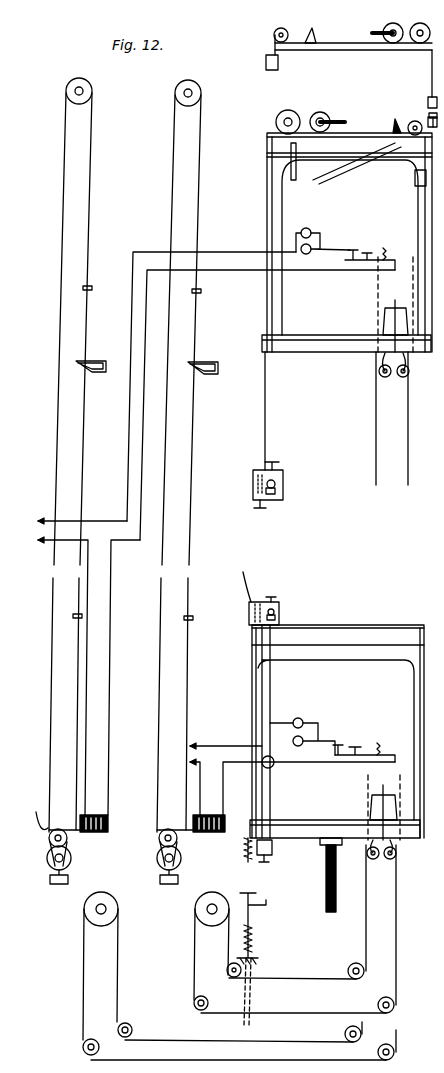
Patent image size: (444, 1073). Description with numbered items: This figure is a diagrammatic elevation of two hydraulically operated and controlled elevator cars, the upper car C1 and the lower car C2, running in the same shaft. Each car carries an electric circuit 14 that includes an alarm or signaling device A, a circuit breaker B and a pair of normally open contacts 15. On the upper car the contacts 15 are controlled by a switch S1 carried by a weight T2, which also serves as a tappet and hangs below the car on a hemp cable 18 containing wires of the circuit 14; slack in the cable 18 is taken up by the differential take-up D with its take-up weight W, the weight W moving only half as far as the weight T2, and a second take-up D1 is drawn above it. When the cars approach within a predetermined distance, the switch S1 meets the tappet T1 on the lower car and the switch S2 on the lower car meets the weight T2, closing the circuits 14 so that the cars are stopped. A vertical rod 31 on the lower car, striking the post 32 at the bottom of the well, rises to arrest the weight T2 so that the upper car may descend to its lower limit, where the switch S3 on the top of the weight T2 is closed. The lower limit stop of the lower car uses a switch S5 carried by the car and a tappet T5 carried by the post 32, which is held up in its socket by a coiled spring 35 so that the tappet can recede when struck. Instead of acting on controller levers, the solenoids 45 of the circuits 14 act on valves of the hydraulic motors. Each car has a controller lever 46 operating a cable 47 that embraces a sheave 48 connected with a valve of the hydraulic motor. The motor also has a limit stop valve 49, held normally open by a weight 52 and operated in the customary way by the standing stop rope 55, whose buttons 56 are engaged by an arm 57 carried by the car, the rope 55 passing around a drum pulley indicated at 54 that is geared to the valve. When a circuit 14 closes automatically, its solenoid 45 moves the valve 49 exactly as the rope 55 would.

The upper drive shaft assembly D1 is at (353, 28).
The differential take-up D is at (355, 118).
The take-up weight W is at (279, 63).
The upper elevator car C1 is at (347, 255).
The lower elevator car C2 is at (337, 768).
The alarm or signaling device A is at (310, 481).
The circuit breaker B is at (364, 496).
The circuit 14 is at (292, 210).
The controller lever 46 is at (395, 306).
The cable 18 is at (267, 420).
The switch S3 is at (279, 464).
The weight T2 is at (283, 486).
The switch S1 is at (262, 510).
The cable 47 is at (410, 465).
The vertical rod 31 is at (228, 862).
The tappet T1 is at (265, 600).
The switch S2 is at (276, 598).
The contacts 15 is at (279, 617).
The standing stop rope 55 is at (48, 718).
The buttons 56 is at (92, 288).
The arm 57 is at (96, 361).
The belt support 54 is at (34, 812).
The solenoid 45 is at (95, 815).
The limit stop valve 49 is at (155, 858).
The weight 52 is at (59, 884).
The sheave or pulley 48 is at (108, 896).
The post 32 is at (246, 898).
The switch S5 is at (268, 862).
The tappet T5 is at (266, 905).
The coiled spring 35 is at (252, 935).